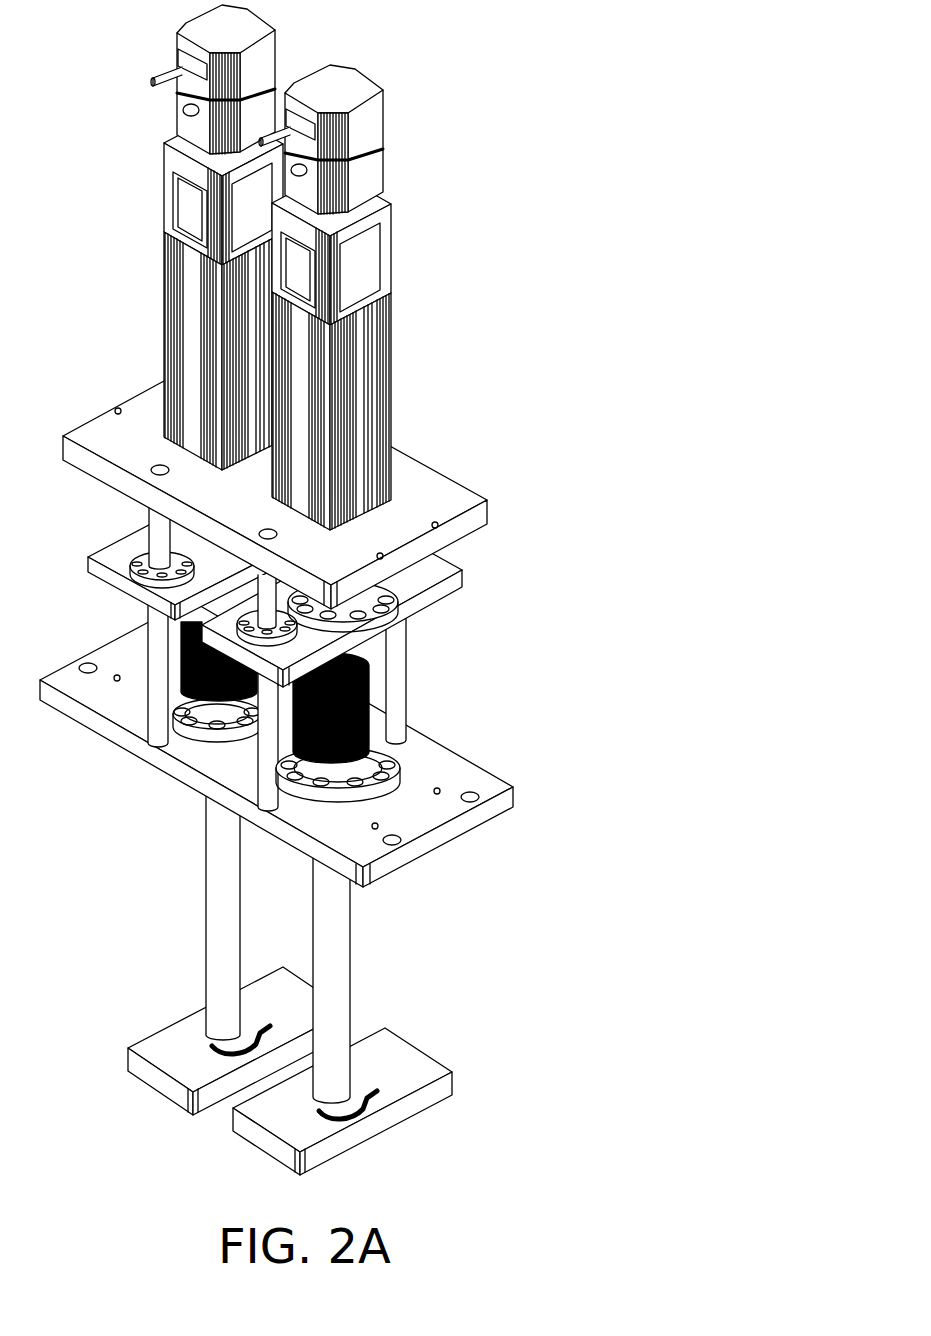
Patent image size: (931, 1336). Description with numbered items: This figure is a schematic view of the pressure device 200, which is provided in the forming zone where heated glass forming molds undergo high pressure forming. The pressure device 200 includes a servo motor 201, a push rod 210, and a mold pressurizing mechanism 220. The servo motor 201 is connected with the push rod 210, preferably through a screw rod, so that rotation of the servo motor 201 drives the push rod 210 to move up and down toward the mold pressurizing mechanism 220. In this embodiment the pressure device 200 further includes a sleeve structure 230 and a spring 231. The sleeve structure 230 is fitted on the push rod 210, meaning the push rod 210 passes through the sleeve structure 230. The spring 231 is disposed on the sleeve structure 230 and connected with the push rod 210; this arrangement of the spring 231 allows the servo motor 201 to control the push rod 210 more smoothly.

The pressure device 200 is at (368, 590).
The servo motor 201 is at (397, 273).
The push rod 210 is at (347, 997).
The mold pressurizing mechanism 220 is at (407, 1127).
The sleeve structure 230 is at (393, 653).
The spring 231 is at (490, 765).